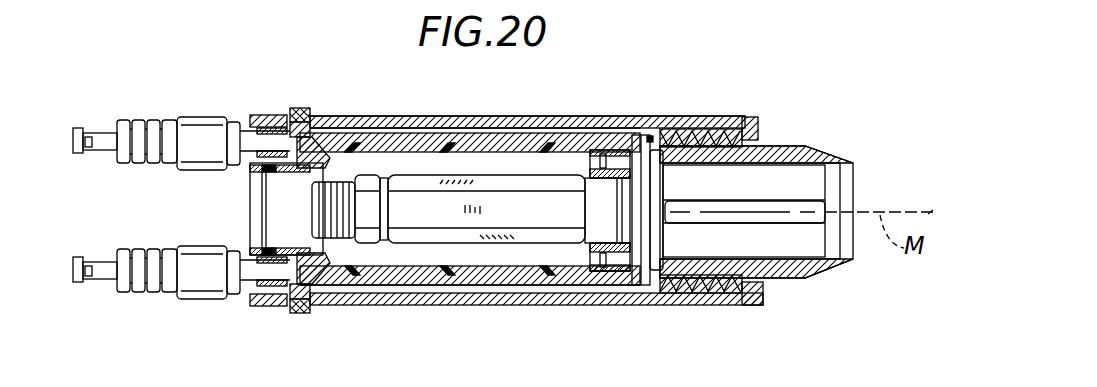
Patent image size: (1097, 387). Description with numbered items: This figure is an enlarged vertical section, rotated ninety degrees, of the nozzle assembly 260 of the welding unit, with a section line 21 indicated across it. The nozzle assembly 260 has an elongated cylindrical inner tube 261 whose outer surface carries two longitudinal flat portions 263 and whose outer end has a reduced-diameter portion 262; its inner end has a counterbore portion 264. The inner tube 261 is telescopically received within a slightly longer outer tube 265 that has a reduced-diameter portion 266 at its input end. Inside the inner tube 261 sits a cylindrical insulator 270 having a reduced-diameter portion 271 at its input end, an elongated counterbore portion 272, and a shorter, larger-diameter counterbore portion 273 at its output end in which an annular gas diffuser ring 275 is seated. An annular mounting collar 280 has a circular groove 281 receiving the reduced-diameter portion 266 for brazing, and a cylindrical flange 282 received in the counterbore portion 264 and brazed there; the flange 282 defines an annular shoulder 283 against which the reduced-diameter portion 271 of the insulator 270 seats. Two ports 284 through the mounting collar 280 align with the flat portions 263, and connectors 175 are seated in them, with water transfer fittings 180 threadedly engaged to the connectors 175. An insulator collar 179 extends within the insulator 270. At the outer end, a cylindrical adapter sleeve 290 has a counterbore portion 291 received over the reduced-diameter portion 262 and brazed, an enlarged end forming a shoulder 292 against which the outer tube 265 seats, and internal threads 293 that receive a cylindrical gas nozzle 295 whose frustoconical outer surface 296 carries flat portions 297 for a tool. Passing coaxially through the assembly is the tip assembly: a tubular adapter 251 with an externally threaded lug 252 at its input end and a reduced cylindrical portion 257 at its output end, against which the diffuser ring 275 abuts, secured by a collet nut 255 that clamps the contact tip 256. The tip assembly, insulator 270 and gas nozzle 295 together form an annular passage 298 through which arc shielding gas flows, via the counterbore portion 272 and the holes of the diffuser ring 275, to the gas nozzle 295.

The nozzle assembly 260 is at (706, 49).
The water transfer fittings 180 is at (168, 174).
The connectors 175 is at (241, 171).
The reduced-diameter portion 271 is at (237, 141).
The insulator collar 179 is at (262, 122).
The ports 284 is at (253, 280).
The counterbore portion 264 is at (333, 122).
The circular groove 281 is at (307, 124).
The reduced-diameter portion 266 is at (323, 300).
The mounting collar 280 is at (296, 305).
The annular shoulder 283 is at (318, 176).
The cylindrical flange 282 is at (328, 303).
The annular passage 298 is at (494, 163).
The outer tube 265 is at (472, 88).
The flat portions 263 is at (503, 290).
The insulator 270 is at (347, 150).
The counterbore portion 272 is at (436, 262).
The inner tube 261 is at (420, 292).
The externally threaded lug 252 is at (318, 204).
The tubular adapter 251 is at (455, 221).
The reduced cylindrical portion 257 is at (598, 202).
The gas diffuser ring 275 is at (636, 155).
The counterbore portion 273 is at (596, 266).
The reduced-diameter portion 262 is at (613, 152).
The frustoconical outer surface 296 is at (832, 150).
The flat portions 297 is at (776, 140).
The internal threads 293 is at (718, 282).
The gas nozzle 295 is at (797, 290).
The adapter sleeve 290 is at (744, 117).
The shoulder 292 is at (722, 297).
The counterbore portion 291 is at (645, 290).
The collet nut 255 is at (665, 200).
The contact tip 256 is at (815, 200).
The section line 21 is at (597, 55).